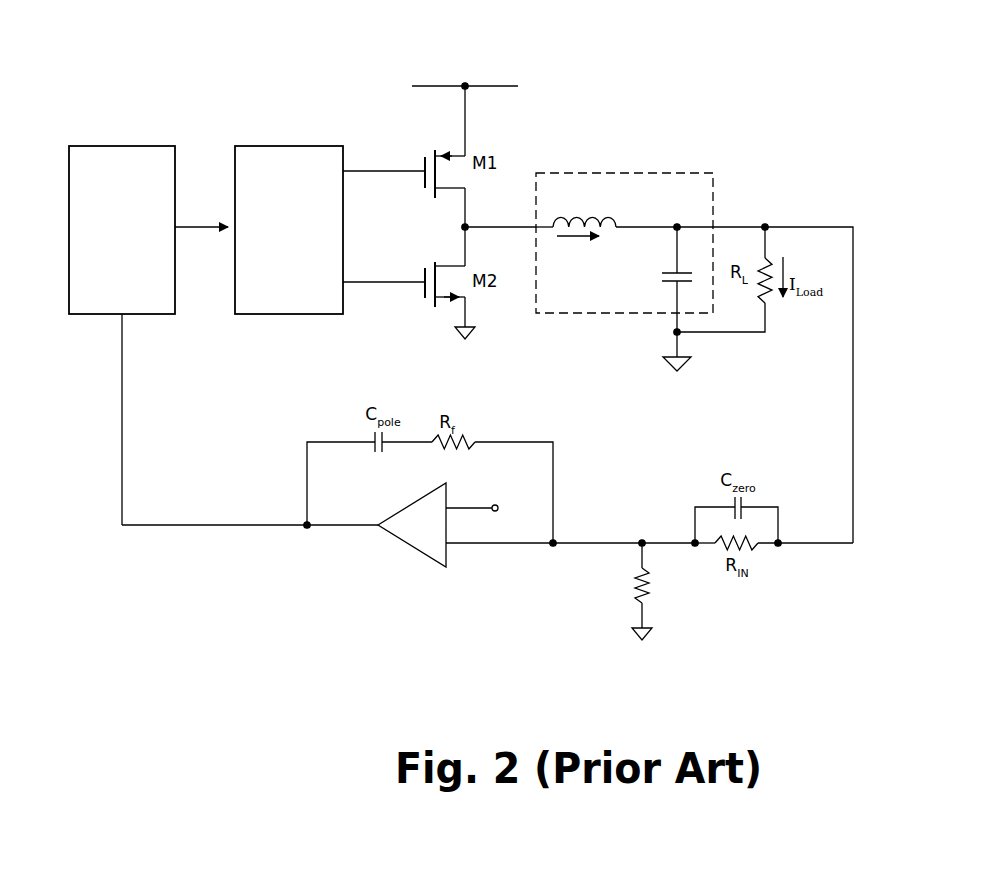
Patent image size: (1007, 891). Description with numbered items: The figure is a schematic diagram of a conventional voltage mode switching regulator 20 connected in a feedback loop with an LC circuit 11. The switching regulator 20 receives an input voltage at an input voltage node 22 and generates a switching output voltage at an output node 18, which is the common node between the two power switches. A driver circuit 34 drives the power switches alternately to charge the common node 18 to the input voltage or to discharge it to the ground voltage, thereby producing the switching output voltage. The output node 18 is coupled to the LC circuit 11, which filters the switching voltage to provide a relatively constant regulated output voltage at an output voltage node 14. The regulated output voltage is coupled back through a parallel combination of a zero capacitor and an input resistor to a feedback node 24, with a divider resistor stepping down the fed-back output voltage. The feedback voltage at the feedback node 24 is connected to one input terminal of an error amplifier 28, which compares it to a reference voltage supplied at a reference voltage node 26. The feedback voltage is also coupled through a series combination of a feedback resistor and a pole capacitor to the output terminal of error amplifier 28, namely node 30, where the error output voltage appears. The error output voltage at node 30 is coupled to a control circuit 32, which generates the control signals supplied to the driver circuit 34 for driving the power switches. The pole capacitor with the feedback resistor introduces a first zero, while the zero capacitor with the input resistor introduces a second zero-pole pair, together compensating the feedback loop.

The switching regulator 20 is at (722, 64).
The input voltage node 22 is at (518, 86).
The control circuit 32 is at (69, 177).
The driver circuit 34 is at (240, 314).
The output node 18 is at (465, 227).
The LC circuit 11 is at (677, 173).
The output voltage node 14 is at (853, 227).
The output terminal of error amplifier 30 is at (183, 528).
The error amplifier 28 is at (380, 530).
The reference voltage node 26 is at (494, 507).
The feedback node 24 is at (645, 547).